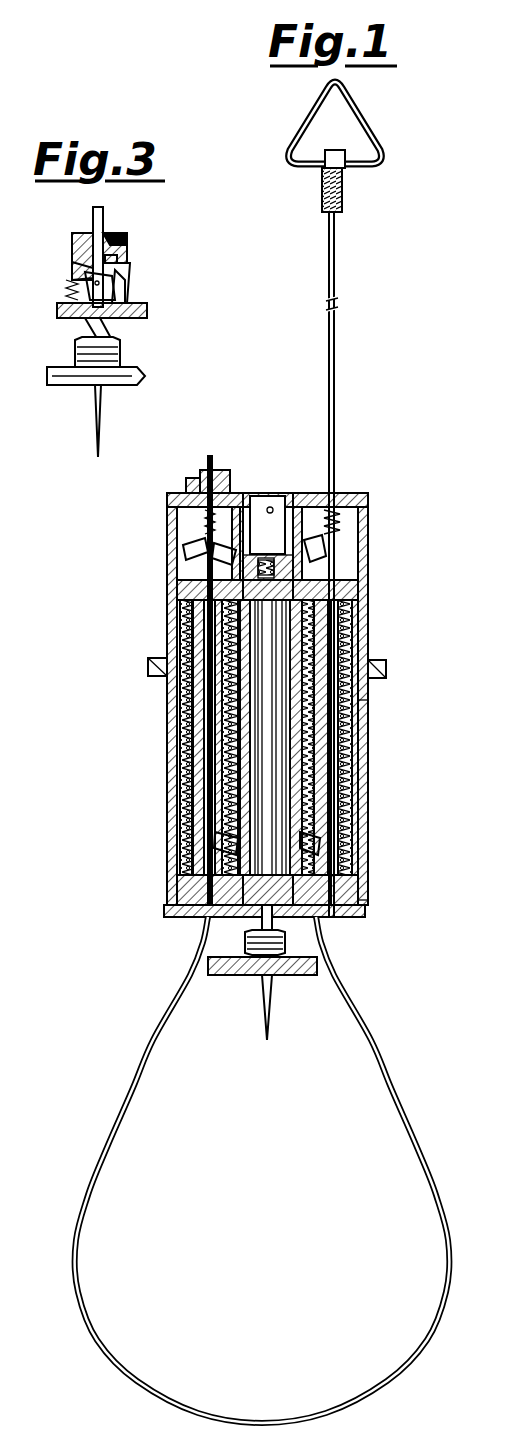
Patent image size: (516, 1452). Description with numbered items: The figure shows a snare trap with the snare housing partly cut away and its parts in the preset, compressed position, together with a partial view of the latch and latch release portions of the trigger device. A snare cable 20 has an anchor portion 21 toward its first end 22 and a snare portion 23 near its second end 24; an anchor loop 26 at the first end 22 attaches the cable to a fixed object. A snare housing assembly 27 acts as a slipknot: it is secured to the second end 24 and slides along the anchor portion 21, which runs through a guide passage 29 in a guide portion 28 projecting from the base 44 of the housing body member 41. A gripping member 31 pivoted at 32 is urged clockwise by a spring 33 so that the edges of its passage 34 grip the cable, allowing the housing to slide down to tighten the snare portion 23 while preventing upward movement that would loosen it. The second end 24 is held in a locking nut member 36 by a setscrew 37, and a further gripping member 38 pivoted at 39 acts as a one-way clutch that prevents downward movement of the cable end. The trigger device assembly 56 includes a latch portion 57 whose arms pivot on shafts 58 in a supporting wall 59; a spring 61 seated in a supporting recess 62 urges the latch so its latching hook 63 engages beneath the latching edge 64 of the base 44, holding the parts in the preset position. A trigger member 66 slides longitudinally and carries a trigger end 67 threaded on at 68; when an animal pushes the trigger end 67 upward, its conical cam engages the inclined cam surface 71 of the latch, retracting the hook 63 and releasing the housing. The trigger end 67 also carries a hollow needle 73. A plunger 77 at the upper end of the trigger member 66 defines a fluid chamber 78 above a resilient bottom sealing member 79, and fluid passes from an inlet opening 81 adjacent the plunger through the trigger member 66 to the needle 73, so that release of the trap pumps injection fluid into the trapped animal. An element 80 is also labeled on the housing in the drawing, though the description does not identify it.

In FIG. 1, the snare cable 20 is at (337, 292).
In FIG. 1, the anchor portion 21 is at (328, 417).
In FIG. 1, the first end 22 is at (332, 146).
In FIG. 1, the snare portion 23 is at (138, 1082).
In FIG. 1, the second end 24 is at (208, 458).
In FIG. 1, the anchor loop 26 is at (291, 168).
In FIG. 1, the snare housing assembly 27 is at (386, 608).
In FIG. 1, the guide portion 28 is at (340, 652).
In FIG. 1, the guide passage 29 is at (358, 682).
In FIG. 1, the gripping member 31 is at (342, 537).
In FIG. 1, the pivot 32 is at (293, 495).
In FIG. 1, the spring 33 is at (300, 495).
In FIG. 1, the passage 34 is at (312, 560).
In FIG. 1, the locking nut member 36 is at (218, 476).
In FIG. 1, the setscrew 37 is at (186, 484).
In FIG. 1, the further gripping member 38 is at (190, 562).
In FIG. 1, the pivot 39 is at (178, 574).
In FIG. 1, the housing body member 41 is at (381, 770).
In FIG. 3, the base 44 is at (148, 313).
In FIG. 3, the trigger device assembly 56 is at (38, 259).
In FIG. 3, the latch portion 57 is at (118, 298).
In FIG. 3, the shafts 58 is at (112, 283).
In FIG. 3, the supporting wall 59 is at (72, 277).
In FIG. 3, the spring 61 is at (113, 263).
In FIG. 3, the supporting recess 62 is at (115, 247).
In FIG. 3, the latching hook 63 is at (90, 322).
In FIG. 3, the latching edge 64 is at (68, 300).
In FIG. 1, the trigger member 66 is at (317, 815).
In FIG. 3, the trigger member 66 is at (80, 220).
In FIG. 1, the trigger end 67 is at (236, 976).
In FIG. 3, the trigger end 67 is at (80, 385).
In FIG. 1, the thread 68 is at (245, 945).
In FIG. 1, the inclined cam surface 71 is at (278, 927).
In FIG. 3, the inclined cam surface 71 is at (92, 334).
In FIG. 1, the hollow needle 73 is at (264, 1010).
In FIG. 1, the plunger 77 is at (190, 596).
In FIG. 1, the fluid chamber 78 is at (310, 718).
In FIG. 1, the resilient bottom sealing member 79 is at (207, 836).
In FIG. 1, the outer coil spring 80 is at (172, 750).
In FIG. 1, the inlet opening 81 is at (190, 614).